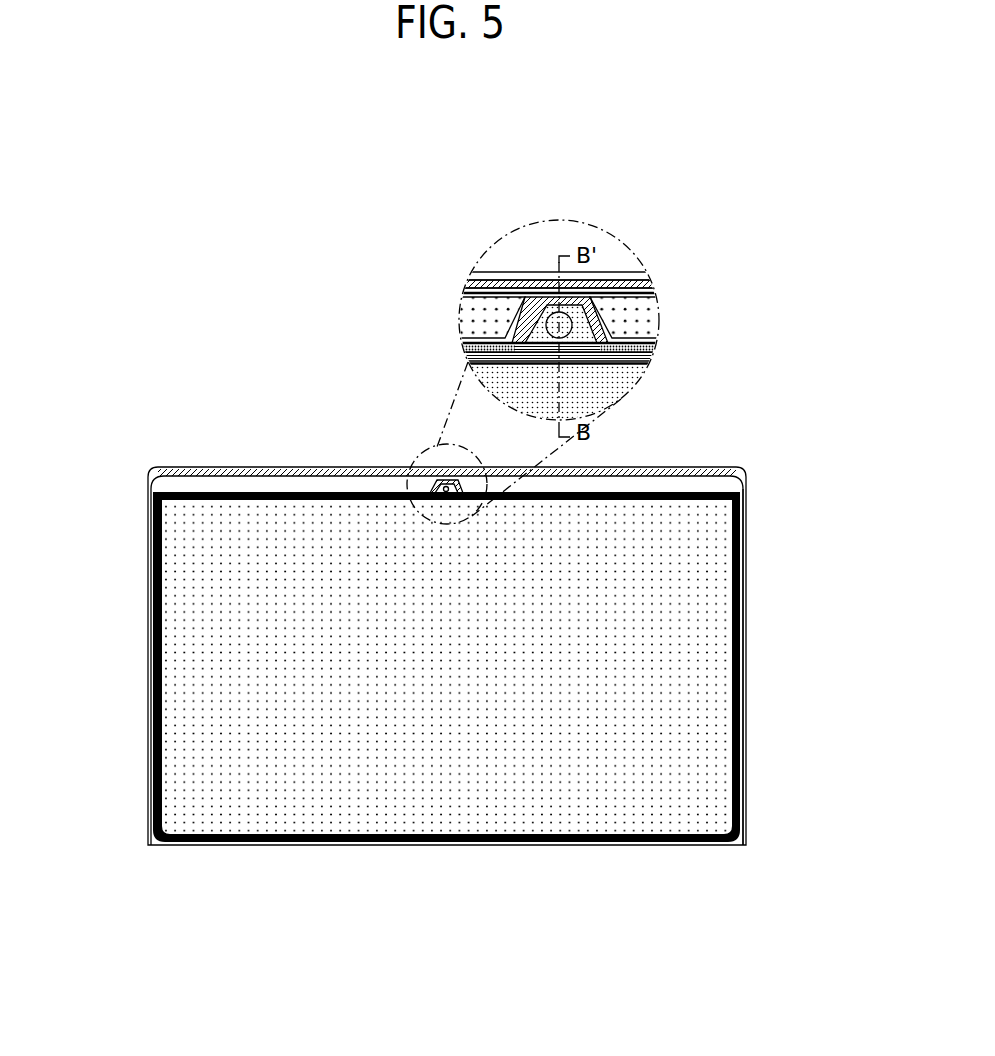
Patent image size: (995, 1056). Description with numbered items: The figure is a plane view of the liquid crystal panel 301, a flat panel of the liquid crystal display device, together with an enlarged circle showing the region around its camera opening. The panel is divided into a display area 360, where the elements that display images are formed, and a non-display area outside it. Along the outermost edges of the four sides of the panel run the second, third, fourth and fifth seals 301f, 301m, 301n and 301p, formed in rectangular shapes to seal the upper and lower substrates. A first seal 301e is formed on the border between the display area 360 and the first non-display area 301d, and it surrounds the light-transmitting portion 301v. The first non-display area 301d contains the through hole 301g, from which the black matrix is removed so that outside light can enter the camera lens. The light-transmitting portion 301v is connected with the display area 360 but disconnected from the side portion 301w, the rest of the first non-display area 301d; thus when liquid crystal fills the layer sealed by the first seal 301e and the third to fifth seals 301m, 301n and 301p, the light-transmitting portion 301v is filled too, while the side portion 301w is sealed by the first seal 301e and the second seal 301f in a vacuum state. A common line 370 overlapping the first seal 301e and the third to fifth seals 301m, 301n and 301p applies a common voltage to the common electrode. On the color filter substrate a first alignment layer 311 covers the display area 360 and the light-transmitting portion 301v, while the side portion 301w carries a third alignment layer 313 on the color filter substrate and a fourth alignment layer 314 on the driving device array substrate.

The liquid crystal panel 301 is at (365, 470).
The first non-display area 301d is at (303, 483).
The first seal 301e is at (191, 492).
The second seal 301f is at (250, 470).
The through hole 301g is at (435, 480).
The light-transmitting portion 301v is at (542, 313).
The side portion 301w is at (630, 295).
The third seal 301m is at (153, 618).
The fourth seal 301n is at (738, 672).
The fifth seal 301p is at (427, 838).
The first alignment layer 311 is at (578, 392).
The third alignment layer 313 is at (637, 320).
The fourth alignment layer 314 is at (490, 317).
The display area 360 is at (693, 747).
The common line 370 is at (738, 548).